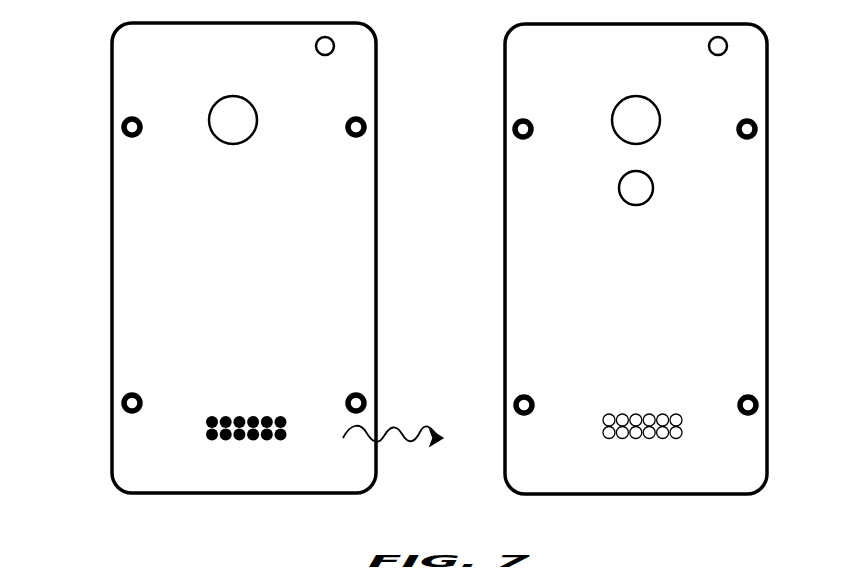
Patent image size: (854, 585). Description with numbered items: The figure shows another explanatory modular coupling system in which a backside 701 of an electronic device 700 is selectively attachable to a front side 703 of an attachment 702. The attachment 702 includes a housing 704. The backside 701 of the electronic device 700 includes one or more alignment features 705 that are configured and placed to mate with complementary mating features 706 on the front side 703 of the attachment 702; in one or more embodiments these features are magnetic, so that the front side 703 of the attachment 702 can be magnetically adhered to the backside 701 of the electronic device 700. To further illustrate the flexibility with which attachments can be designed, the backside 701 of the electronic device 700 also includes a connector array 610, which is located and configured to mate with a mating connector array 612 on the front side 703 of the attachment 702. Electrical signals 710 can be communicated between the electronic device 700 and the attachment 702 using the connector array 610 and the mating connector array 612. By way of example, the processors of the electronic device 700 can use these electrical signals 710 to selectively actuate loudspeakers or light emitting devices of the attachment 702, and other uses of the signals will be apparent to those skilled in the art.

The electronic device 700 is at (77, 129).
The backside 701 is at (110, 348).
The alignment features 705 is at (143, 128).
The connector array 610 is at (286, 435).
The electrical signals 710 is at (395, 425).
The attachment 702 is at (785, 131).
The front side 703 is at (735, 279).
The housing 704 is at (768, 365).
The complementary mating features 706 is at (535, 128).
The mating connector array 612 is at (648, 414).